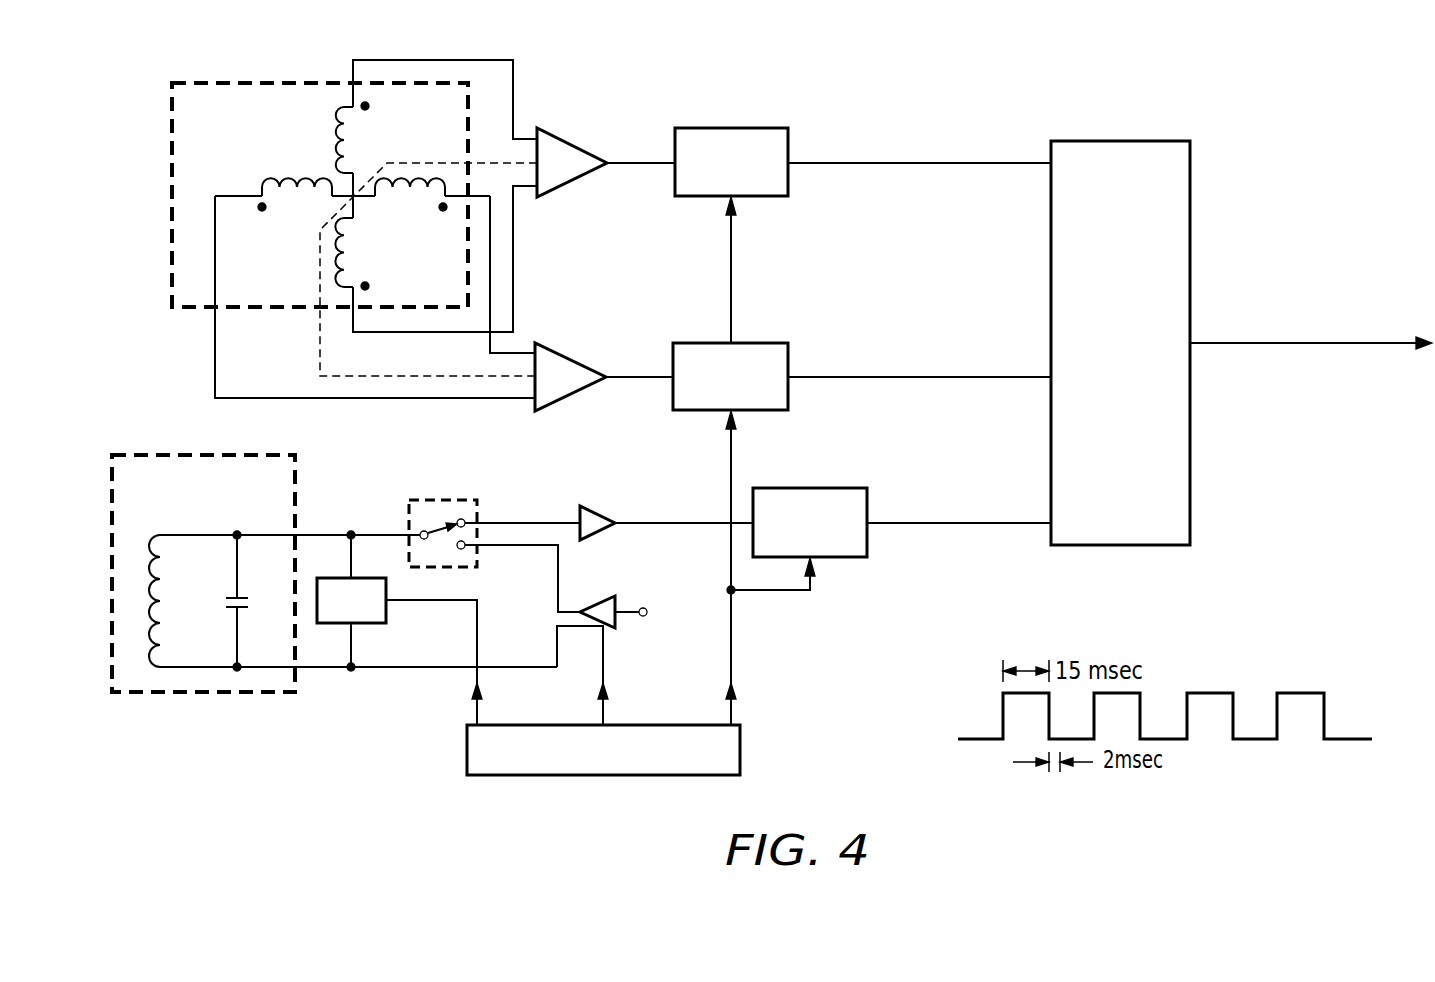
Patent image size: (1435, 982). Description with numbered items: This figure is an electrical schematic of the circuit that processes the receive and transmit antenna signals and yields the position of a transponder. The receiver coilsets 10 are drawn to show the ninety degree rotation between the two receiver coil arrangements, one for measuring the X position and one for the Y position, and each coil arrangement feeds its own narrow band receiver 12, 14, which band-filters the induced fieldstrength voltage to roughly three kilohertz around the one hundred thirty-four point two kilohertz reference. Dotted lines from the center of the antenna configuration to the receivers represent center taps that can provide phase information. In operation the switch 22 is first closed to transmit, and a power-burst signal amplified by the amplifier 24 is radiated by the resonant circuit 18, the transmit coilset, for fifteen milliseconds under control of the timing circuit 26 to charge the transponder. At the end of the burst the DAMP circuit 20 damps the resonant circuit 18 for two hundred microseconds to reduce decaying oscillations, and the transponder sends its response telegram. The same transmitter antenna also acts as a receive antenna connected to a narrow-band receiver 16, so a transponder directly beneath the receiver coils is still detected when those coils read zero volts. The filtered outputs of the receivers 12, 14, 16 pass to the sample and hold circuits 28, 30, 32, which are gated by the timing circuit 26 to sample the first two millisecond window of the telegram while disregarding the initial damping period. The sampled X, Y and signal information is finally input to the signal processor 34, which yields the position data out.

The receiver coilset 10 is at (245, 82).
The narrow band receiver 12 is at (567, 140).
The narrow band receiver 14 is at (572, 357).
The narrow-band receiver 16 is at (603, 511).
The transmitter antenna / resonant circuit 18 is at (200, 693).
The DAMP circuit 20 is at (386, 610).
The switch 22 is at (436, 499).
The amplifier 24 is at (614, 630).
The timing circuit 26 is at (604, 776).
The sample and hold circuit 28 is at (732, 127).
The sample and hold circuit 30 is at (757, 342).
The sample and hold circuit 32 is at (833, 487).
The signal processor 34 is at (1136, 491).